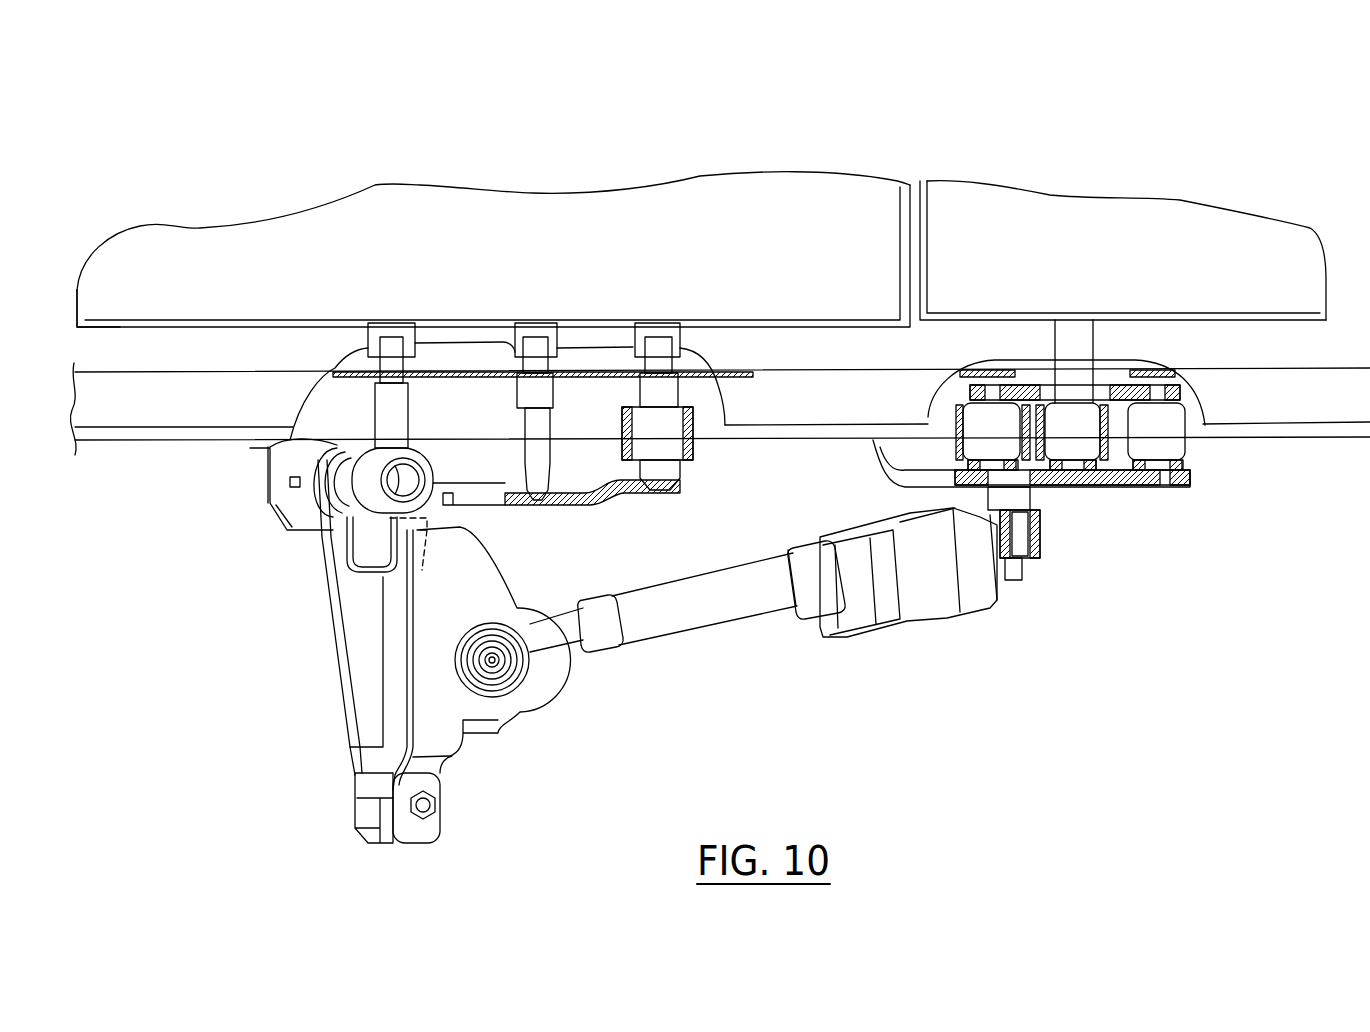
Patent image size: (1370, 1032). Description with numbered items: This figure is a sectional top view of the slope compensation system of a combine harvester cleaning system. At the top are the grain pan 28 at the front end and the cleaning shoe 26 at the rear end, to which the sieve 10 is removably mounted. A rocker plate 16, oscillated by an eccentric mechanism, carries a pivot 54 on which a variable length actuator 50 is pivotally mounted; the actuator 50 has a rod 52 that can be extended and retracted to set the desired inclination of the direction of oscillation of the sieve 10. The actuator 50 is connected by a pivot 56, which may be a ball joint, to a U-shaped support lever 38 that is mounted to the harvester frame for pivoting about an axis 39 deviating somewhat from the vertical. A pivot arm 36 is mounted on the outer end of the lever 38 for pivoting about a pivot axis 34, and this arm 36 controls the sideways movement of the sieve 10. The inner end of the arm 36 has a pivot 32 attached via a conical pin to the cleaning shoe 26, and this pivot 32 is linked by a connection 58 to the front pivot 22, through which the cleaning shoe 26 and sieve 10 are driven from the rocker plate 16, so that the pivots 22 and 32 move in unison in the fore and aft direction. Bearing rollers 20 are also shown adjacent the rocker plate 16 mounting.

The sieve 10 is at (410, 205).
The cleaning shoe 26 is at (103, 320).
The grain pan 28 is at (1097, 213).
The pivot 32 is at (350, 487).
The axis 39 is at (290, 505).
The pivot arm 36 is at (388, 692).
The support lever 38 is at (450, 752).
The pivot axis 34 is at (437, 805).
The pivot 56 is at (508, 683).
The rod 52 is at (560, 620).
The actuator 50 is at (853, 637).
The pivot 22 is at (683, 452).
The connection 58 is at (577, 505).
The roller assembly 20 is at (972, 417).
The rocker plate 16 is at (1130, 485).
The pivot 54 is at (1015, 580).